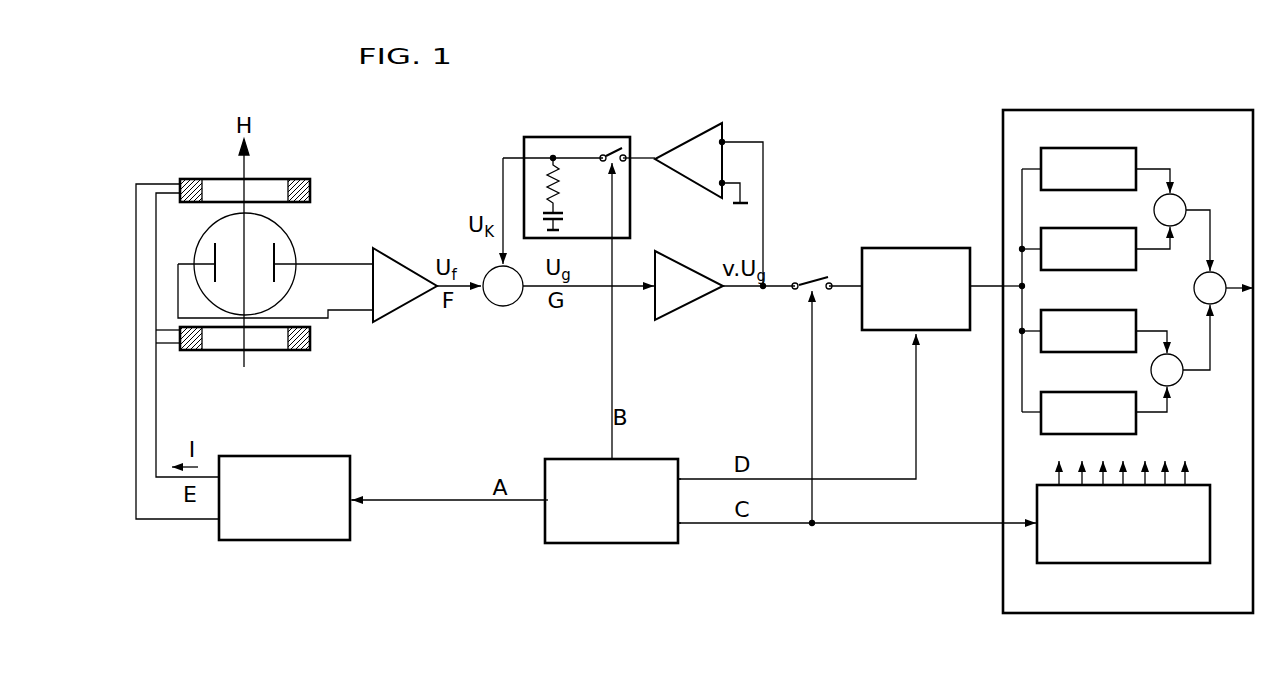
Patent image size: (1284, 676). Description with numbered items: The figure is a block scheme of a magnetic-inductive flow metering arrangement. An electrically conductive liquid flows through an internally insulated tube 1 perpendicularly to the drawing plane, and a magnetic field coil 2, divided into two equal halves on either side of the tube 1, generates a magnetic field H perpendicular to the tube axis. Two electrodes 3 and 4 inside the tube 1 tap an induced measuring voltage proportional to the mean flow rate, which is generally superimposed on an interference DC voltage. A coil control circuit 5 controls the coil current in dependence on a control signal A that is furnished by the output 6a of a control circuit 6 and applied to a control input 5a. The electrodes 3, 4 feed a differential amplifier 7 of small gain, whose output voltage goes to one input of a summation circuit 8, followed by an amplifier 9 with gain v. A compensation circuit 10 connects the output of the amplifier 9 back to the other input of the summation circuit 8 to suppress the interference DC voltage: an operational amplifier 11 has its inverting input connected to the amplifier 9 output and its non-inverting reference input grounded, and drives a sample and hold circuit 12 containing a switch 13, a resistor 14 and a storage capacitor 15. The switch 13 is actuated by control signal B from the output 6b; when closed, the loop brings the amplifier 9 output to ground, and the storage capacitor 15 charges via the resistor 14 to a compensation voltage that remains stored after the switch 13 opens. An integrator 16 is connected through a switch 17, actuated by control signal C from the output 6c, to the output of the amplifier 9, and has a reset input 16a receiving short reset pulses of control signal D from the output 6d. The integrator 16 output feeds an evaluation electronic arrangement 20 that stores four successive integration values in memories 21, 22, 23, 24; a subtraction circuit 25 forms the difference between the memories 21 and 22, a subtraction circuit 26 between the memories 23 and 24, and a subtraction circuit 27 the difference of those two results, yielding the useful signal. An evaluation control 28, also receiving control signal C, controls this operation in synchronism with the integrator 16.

The internally insulated tube 1 is at (284, 239).
The magnetic field coil 2 is at (312, 191).
The electrode 3 is at (211, 256).
The electrode 4 is at (276, 278).
The coil control circuit 5 is at (305, 542).
The control input of coil control circuit 5a is at (352, 507).
The control circuit 6 is at (617, 544).
The output of control circuit 6a is at (545, 506).
The output of control circuit 6b is at (608, 459).
The output of control circuit 6c is at (680, 526).
The output of control circuit 6d is at (680, 469).
The differential amplifier 7 is at (398, 301).
The summation circuit 8 is at (510, 305).
The amplifier 9 is at (687, 299).
The compensation circuit 10 is at (675, 234).
The operational amplifier 11 is at (686, 146).
The sample and hold circuit 12 is at (540, 138).
The switch 13 is at (614, 148).
The resistor 14 is at (559, 171).
The storage capacitor 15 is at (566, 221).
The integrator 16 is at (915, 251).
The reset input 16a is at (912, 336).
The switch 17 is at (815, 280).
The evaluation electronic arrangement 20 is at (1003, 153).
The memory 21 is at (1078, 393).
The memory 22 is at (1070, 311).
The memory 23 is at (1070, 229).
The memory 24 is at (1072, 149).
The subtraction circuit 25 is at (1151, 370).
The subtraction circuit 26 is at (1154, 212).
The subtraction circuit 27 is at (1194, 290).
The evaluation control 28 is at (1045, 506).